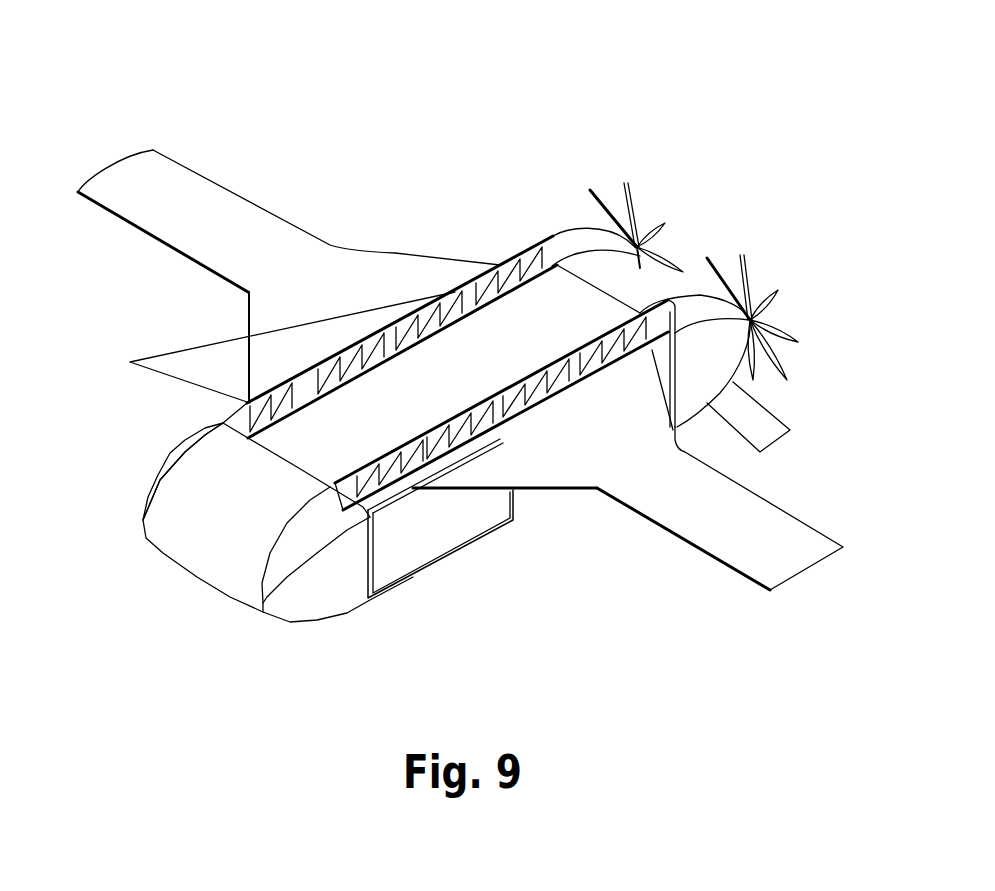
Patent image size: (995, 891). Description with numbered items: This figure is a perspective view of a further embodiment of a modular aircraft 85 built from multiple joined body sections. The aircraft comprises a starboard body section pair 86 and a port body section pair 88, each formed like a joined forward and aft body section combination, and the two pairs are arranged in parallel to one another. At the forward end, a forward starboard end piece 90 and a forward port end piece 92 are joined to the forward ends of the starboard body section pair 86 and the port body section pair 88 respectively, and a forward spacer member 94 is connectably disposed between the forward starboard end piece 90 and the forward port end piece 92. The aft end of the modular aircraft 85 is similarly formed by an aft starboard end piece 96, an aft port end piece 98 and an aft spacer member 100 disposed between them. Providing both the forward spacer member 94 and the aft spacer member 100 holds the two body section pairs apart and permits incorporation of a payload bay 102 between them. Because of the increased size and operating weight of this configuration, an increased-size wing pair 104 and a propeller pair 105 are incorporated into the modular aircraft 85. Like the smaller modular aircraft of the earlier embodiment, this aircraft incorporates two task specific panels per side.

The modular aircraft 85 is at (413, 132).
The starboard body section pair 86 is at (276, 347).
The port body section pair 88 is at (585, 368).
The forward starboard end piece 90 is at (173, 470).
The forward port end piece 92 is at (315, 523).
The forward spacer member 94 is at (230, 537).
The aft starboard end piece 96 is at (560, 243).
The aft port end piece 98 is at (707, 308).
The aft spacer member 100 is at (640, 290).
The payload bay 102 is at (472, 350).
The wing pair 104 is at (255, 238).
The propeller pair 105 is at (626, 190).